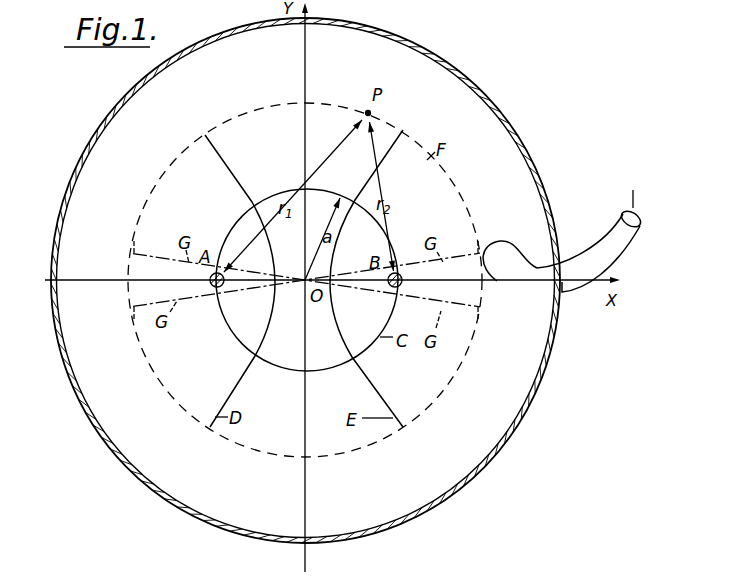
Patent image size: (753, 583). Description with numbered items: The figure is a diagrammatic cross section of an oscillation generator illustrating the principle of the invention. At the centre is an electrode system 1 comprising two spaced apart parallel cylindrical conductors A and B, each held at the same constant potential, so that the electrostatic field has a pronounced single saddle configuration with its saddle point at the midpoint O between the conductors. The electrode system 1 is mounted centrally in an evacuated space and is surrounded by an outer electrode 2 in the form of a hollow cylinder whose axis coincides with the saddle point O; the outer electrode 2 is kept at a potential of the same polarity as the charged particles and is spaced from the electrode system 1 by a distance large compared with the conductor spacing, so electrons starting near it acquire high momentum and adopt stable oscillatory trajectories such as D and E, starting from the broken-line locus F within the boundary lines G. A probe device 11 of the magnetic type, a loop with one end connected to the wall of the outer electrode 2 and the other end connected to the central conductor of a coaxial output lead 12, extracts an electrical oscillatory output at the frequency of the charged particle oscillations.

The electrode system 1 is at (213, 330).
The outer electrode 2 is at (531, 408).
The probe device 11 is at (495, 243).
The coaxial output lead 12 is at (608, 239).